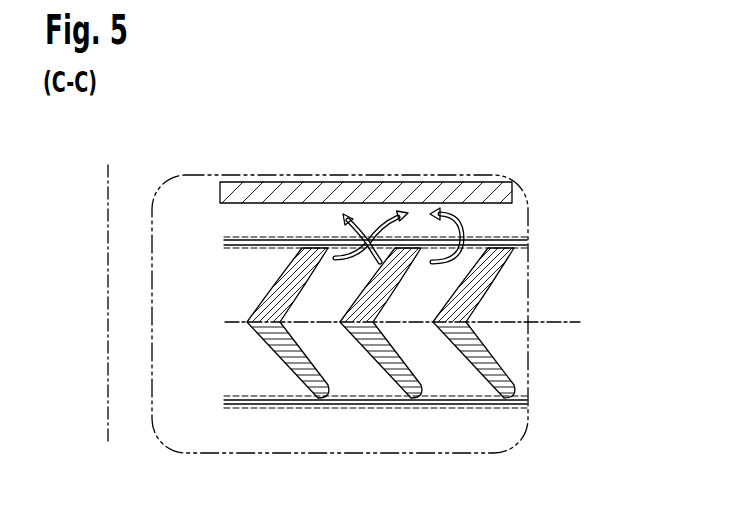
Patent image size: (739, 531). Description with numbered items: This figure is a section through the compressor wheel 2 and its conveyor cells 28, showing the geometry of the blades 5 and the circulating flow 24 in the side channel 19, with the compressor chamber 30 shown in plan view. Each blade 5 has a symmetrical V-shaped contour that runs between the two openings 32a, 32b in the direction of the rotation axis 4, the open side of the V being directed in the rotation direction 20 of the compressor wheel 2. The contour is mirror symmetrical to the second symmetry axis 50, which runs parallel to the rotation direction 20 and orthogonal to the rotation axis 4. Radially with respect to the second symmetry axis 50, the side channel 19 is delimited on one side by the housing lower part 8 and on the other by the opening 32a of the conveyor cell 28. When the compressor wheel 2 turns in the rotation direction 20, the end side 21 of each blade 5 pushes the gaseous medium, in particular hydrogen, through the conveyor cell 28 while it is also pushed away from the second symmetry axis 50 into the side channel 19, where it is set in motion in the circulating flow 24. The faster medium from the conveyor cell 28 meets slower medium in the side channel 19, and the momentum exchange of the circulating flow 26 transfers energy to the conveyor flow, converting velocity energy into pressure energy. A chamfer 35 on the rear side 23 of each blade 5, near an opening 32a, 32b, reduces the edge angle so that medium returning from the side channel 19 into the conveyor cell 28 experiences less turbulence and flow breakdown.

The compressor wheel 2 is at (555, 390).
The rotation axis 4 is at (108, 410).
The blade 5 is at (306, 378).
The housing lower part 8 is at (229, 190).
The side channel 19 is at (315, 205).
The rotation direction 20 is at (491, 138).
The end side 21 is at (316, 348).
The rear side 23 is at (280, 347).
The circulating flow 24 is at (388, 215).
The circulating flow 26 is at (423, 197).
The conveyor cell 28 is at (342, 344).
The compressor chamber 30 is at (172, 172).
The opening 32a is at (505, 230).
The opening 32b is at (505, 416).
The chamfer 35 is at (303, 256).
The second symmetry axis 50 is at (578, 324).